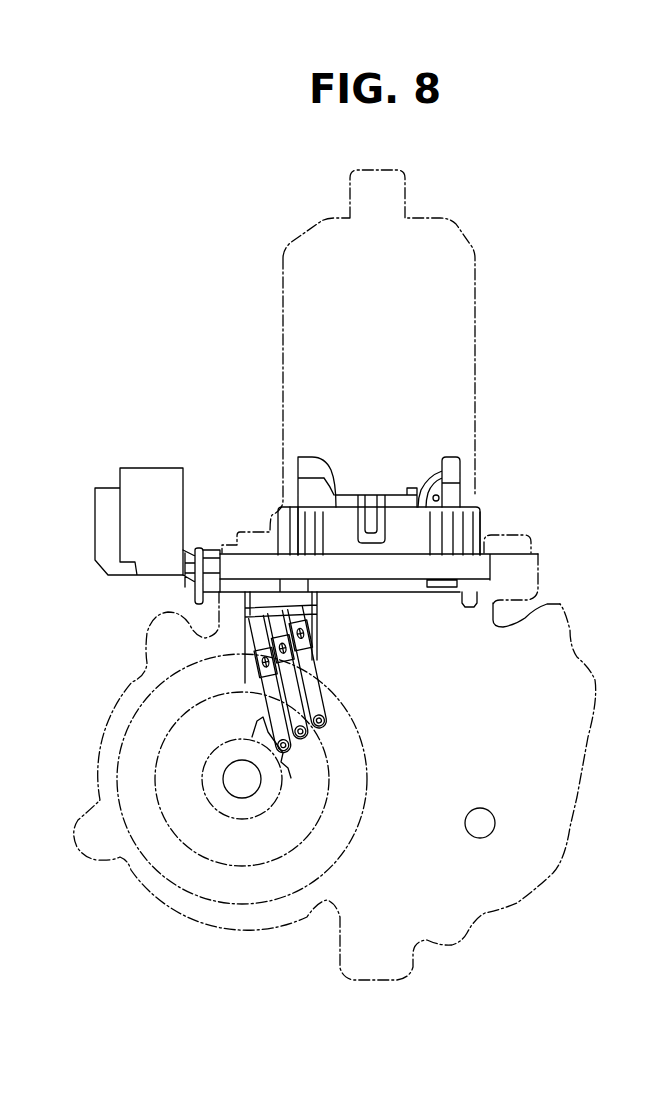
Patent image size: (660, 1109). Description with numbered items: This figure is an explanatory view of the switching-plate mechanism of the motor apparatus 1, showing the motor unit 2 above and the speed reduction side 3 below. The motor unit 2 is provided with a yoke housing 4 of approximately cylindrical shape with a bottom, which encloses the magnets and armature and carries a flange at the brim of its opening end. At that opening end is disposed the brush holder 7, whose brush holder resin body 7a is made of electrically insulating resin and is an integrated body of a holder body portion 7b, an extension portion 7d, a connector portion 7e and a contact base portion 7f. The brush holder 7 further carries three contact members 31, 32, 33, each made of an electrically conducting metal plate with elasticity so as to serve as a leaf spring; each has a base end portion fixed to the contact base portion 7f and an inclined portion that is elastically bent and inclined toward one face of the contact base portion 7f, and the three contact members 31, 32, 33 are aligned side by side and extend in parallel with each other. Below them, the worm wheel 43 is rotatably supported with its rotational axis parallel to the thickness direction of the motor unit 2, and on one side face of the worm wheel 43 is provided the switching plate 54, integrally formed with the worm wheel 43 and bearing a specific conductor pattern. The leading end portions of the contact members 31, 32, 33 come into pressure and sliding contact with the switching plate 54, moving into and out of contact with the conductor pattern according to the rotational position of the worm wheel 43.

The motor apparatus 1 is at (597, 450).
The motor unit 2 is at (541, 475).
The speed reduction unit 3 is at (596, 552).
The yoke housing 4 is at (476, 322).
The brush holder 7 is at (379, 520).
The brush holder resin body 7a is at (485, 522).
The holder body portion 7b is at (292, 486).
The extension portion 7d is at (210, 565).
The connector portion 7e is at (141, 470).
The contact base portion 7f is at (315, 603).
The contact member 31 is at (312, 650).
The contact member 32 is at (296, 698).
The contact member 33 is at (283, 711).
The worm wheel 43 is at (370, 792).
The switching plate 54 is at (367, 771).